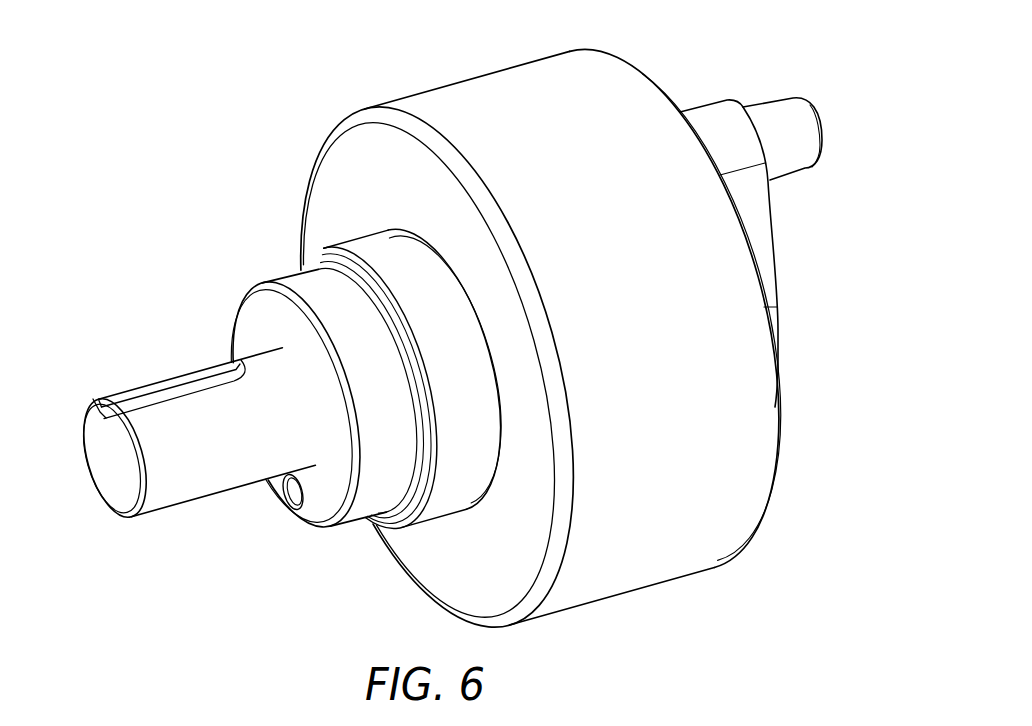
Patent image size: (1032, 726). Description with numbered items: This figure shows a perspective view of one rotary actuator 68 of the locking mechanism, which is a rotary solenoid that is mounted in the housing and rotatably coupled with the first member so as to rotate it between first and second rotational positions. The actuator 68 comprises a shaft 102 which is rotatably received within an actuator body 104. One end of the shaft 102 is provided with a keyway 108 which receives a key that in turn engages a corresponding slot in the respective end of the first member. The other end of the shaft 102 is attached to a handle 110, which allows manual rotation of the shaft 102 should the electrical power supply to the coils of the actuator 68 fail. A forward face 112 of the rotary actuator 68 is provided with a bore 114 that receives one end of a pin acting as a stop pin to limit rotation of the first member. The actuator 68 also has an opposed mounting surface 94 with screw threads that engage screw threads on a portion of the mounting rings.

The rotary actuator 68 is at (427, 346).
The mounting surface 94 is at (440, 512).
The shaft 102 is at (192, 494).
The actuator body 104 is at (746, 516).
The keyway 108 is at (97, 440).
The handle 110 is at (787, 102).
The forward face 112 is at (250, 316).
The bore 114 is at (291, 501).